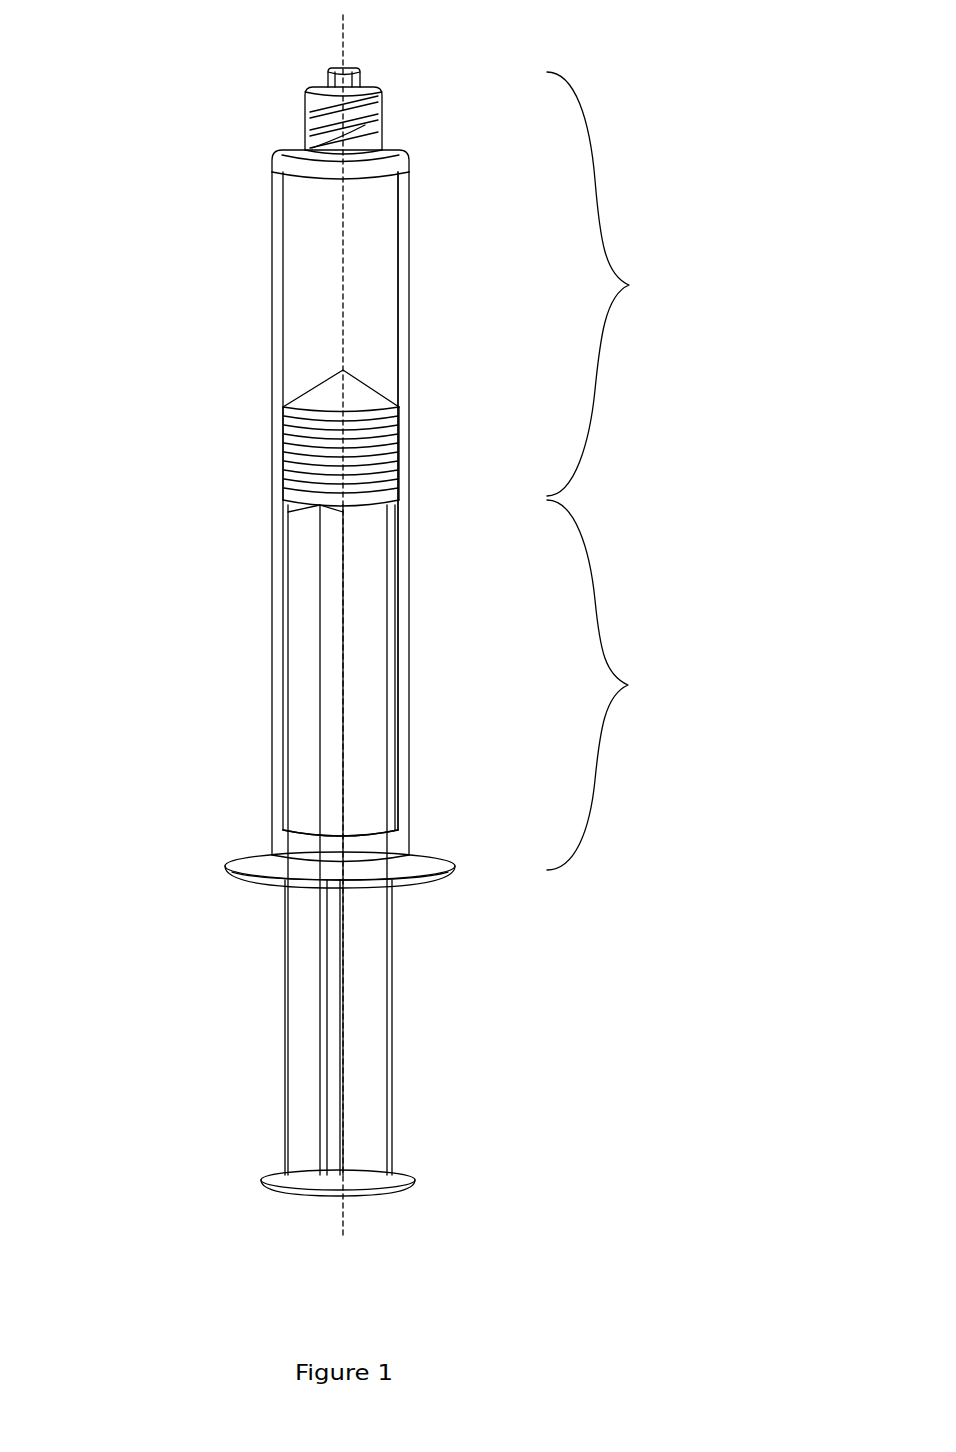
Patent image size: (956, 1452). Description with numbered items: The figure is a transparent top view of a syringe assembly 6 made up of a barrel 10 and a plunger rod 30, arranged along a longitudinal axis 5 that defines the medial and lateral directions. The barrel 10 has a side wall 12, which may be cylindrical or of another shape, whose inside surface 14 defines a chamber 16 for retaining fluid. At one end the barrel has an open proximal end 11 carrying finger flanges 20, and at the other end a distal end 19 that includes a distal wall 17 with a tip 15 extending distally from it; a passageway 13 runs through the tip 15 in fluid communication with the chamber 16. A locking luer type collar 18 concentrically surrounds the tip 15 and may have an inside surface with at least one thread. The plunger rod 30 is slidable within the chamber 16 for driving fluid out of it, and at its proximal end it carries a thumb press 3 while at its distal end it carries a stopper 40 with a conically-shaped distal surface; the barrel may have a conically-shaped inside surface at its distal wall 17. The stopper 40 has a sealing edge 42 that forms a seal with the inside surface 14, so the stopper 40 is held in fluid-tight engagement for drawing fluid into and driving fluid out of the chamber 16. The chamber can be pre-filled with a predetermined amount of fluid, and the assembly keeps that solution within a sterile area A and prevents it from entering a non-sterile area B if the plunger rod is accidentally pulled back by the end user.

The thumb press 3 is at (318, 1197).
The longitudinal axis 5 is at (342, 641).
The syringe assembly 6 is at (162, 128).
The barrel 10 is at (252, 263).
The open proximal end 11 is at (305, 890).
The side wall 12 is at (270, 347).
The passageway 13 is at (373, 142).
The inside surface 14 is at (397, 273).
The tip 15 is at (328, 70).
The chamber 16 is at (385, 318).
The distal wall 17 is at (318, 168).
The collar 18 is at (305, 115).
The distal end 19 is at (352, 70).
The finger flanges 20 is at (453, 868).
The plunger rod 30 is at (393, 1005).
The stopper 40 is at (383, 390).
The sealing edge 42 is at (403, 410).
The sterile area A is at (629, 285).
The non-sterile area B is at (628, 685).